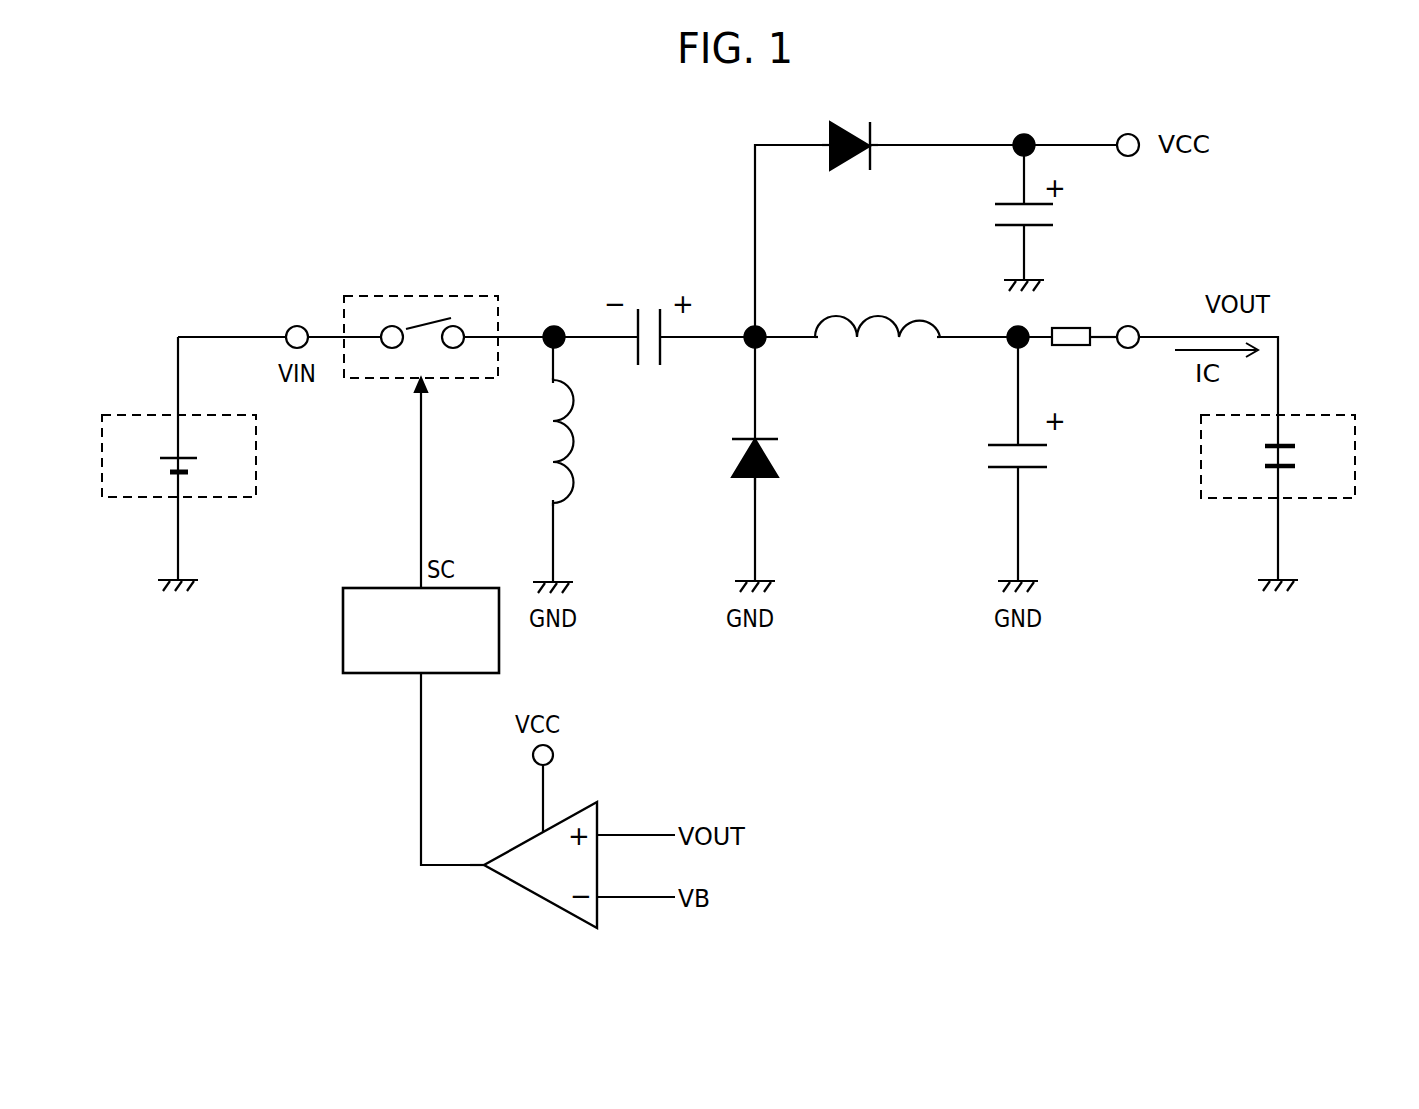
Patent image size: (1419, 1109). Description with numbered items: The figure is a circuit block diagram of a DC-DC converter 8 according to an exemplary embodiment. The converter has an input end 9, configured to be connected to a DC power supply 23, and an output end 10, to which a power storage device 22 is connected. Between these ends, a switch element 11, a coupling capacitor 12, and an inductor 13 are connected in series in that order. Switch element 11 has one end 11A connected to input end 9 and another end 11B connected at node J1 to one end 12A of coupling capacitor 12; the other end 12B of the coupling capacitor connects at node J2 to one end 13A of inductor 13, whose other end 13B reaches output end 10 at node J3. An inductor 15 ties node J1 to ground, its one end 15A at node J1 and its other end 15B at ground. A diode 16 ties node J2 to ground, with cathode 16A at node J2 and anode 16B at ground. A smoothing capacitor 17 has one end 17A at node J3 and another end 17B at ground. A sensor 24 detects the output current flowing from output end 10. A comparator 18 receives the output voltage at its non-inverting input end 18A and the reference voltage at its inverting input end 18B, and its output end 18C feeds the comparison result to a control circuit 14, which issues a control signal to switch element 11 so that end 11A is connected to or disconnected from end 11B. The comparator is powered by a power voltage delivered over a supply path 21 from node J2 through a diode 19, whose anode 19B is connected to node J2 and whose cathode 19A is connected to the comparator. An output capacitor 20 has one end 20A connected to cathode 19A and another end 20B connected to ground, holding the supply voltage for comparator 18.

The DC-DC converter 8 is at (370, 152).
The input end 9 is at (297, 326).
The output end 10 is at (1131, 327).
The switch element 11 is at (405, 280).
The one end of switch element 11A is at (330, 335).
The another end of switch element 11B is at (500, 335).
The coupling capacitor 12 is at (649, 293).
The one end of coupling capacitor 12A is at (598, 340).
The another end of coupling capacitor 12B is at (683, 340).
The inductor 13 is at (890, 291).
The one end of inductor 13A is at (805, 335).
The another end of inductor 13B is at (951, 335).
The control circuit 14 is at (343, 628).
The inductor 15 is at (569, 459).
The one end of inductor 15A is at (553, 380).
The another end of inductor 15B is at (553, 505).
The diode 16 is at (795, 483).
The cathode 16A is at (757, 423).
The anode 16B is at (757, 528).
The smoothing capacitor 17 is at (1038, 463).
The one end of smoothing capacitor 17A is at (1016, 437).
The another end of smoothing capacitor 17B is at (1016, 482).
The comparator 18 is at (560, 847).
The non-inverting input end 18A is at (605, 833).
The inverting input end 18B is at (605, 897).
The output end 18C is at (468, 863).
The diode 19 is at (853, 186).
The cathode 19A is at (888, 146).
The anode 19B is at (810, 146).
The output capacitor 20 is at (1045, 217).
The one end of output capacitor 20A is at (1022, 200).
The another end of output capacitor 20B is at (1020, 237).
The supply path 21 is at (1082, 142).
The power storage device 22 is at (1357, 453).
The DC power supply 23 is at (257, 453).
The sensor 24 is at (1068, 328).
The node J1 is at (554, 326).
The node J2 is at (772, 347).
The node J3 is at (1025, 347).